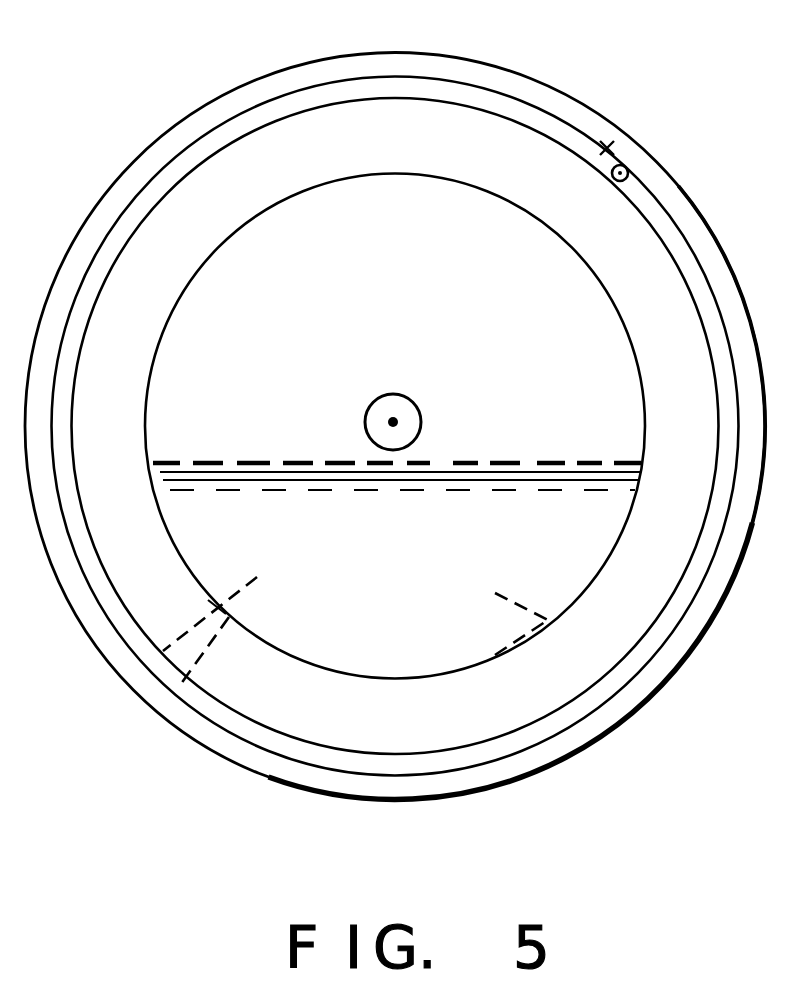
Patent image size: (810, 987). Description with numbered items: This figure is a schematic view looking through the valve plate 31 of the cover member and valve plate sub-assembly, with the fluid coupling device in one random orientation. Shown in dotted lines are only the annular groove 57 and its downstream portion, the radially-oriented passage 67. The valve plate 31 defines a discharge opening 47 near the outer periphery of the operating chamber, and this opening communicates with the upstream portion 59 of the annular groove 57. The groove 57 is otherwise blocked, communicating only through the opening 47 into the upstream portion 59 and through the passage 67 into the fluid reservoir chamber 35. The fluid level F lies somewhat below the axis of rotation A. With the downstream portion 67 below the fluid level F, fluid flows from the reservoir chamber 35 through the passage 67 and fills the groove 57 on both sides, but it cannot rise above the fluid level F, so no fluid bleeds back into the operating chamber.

The valve plate 31 is at (325, 53).
The annular groove 57 is at (132, 206).
The upstream portion 59 is at (610, 148).
The discharge opening 47 is at (626, 171).
The axis of rotation A is at (391, 420).
The fluid level F is at (500, 462).
The radially-oriented passage 67 is at (244, 588).
The fluid reservoir chamber 35 is at (543, 614).